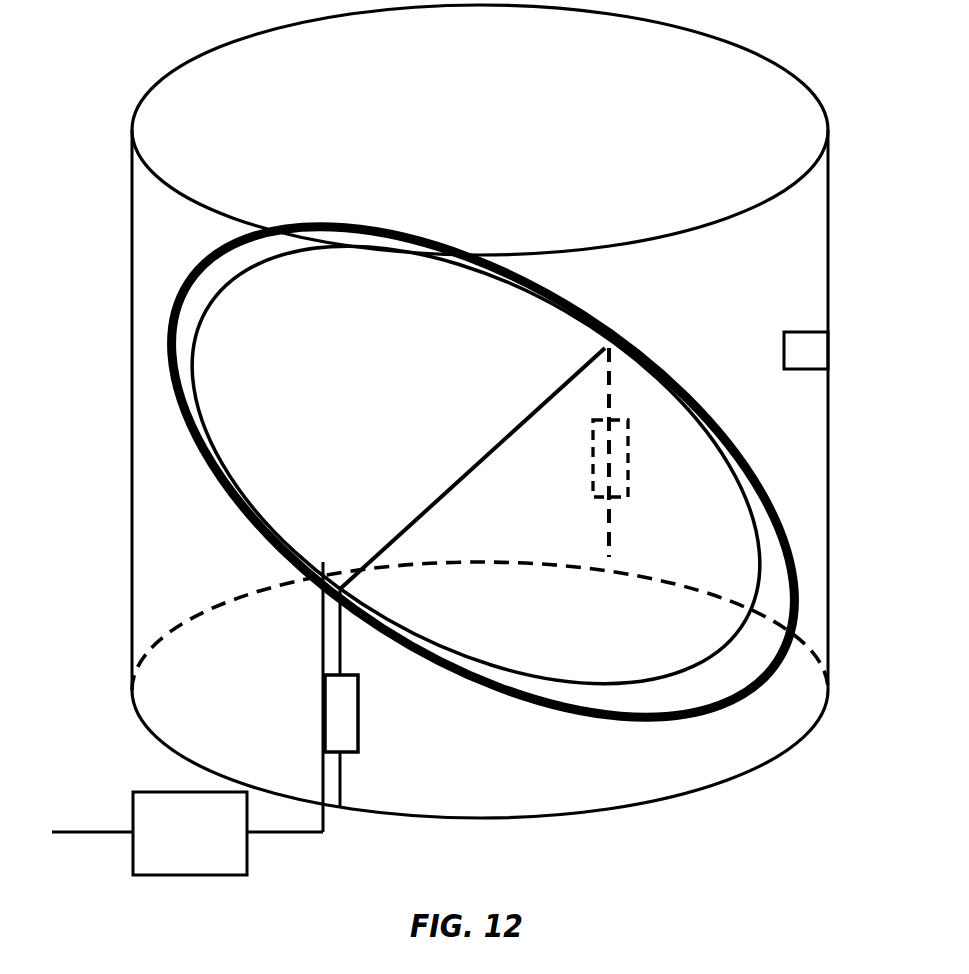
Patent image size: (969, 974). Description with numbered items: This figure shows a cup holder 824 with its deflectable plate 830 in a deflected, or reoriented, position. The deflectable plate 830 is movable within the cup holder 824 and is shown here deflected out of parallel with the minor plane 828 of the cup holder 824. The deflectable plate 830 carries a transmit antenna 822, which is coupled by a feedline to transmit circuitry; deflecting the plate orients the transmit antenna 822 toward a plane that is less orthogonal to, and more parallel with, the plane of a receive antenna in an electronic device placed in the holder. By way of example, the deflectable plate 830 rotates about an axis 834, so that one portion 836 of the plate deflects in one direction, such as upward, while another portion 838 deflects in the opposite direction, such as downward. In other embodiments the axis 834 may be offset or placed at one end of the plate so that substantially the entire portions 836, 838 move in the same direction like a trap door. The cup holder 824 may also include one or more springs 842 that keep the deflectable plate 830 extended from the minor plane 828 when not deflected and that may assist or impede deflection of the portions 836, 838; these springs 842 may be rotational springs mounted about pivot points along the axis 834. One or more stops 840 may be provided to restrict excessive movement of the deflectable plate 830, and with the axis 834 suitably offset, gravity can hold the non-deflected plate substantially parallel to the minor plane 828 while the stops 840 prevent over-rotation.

The cup holder 824 is at (131, 128).
The minor plane 828 is at (700, 755).
The deflectable plate 830 is at (166, 362).
The transmit antenna 822 is at (210, 422).
The axis 834 is at (427, 509).
The portion 836 is at (387, 384).
The portion 838 is at (546, 519).
The stop 840 is at (807, 350).
The spring 842 is at (620, 472).